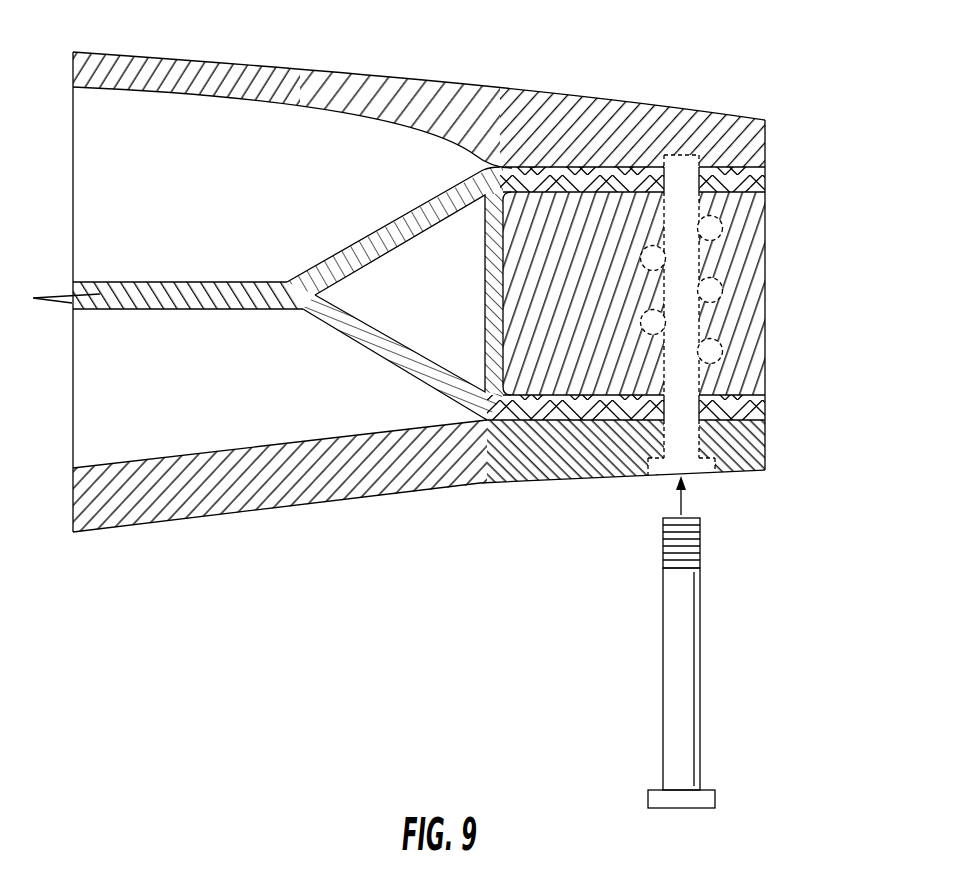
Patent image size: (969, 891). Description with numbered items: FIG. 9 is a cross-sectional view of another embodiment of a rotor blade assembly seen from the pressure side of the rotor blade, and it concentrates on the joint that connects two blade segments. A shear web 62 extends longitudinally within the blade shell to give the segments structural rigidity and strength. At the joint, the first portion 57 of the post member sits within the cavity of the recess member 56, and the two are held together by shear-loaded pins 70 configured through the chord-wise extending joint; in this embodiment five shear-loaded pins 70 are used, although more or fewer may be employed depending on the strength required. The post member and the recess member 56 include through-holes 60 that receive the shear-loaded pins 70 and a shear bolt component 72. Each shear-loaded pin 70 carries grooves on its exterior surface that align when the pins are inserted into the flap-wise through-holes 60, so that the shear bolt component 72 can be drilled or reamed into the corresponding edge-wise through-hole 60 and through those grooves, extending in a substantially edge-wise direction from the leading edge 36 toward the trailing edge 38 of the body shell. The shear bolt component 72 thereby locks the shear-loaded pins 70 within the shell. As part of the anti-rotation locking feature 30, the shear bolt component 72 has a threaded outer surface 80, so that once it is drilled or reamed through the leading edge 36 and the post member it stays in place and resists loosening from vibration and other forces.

The anti-rotation locking feature 30 is at (745, 653).
The leading edge 36 is at (420, 496).
The trailing edge 38 is at (560, 105).
The recess member 56 is at (614, 166).
The first portion of the post member 57 is at (582, 254).
The through-hole 60 is at (700, 377).
The shear web 62 is at (187, 310).
The shear-loaded pin 70 is at (720, 345).
The shear bolt component 72 is at (700, 708).
The threaded outer surface 80 is at (698, 543).